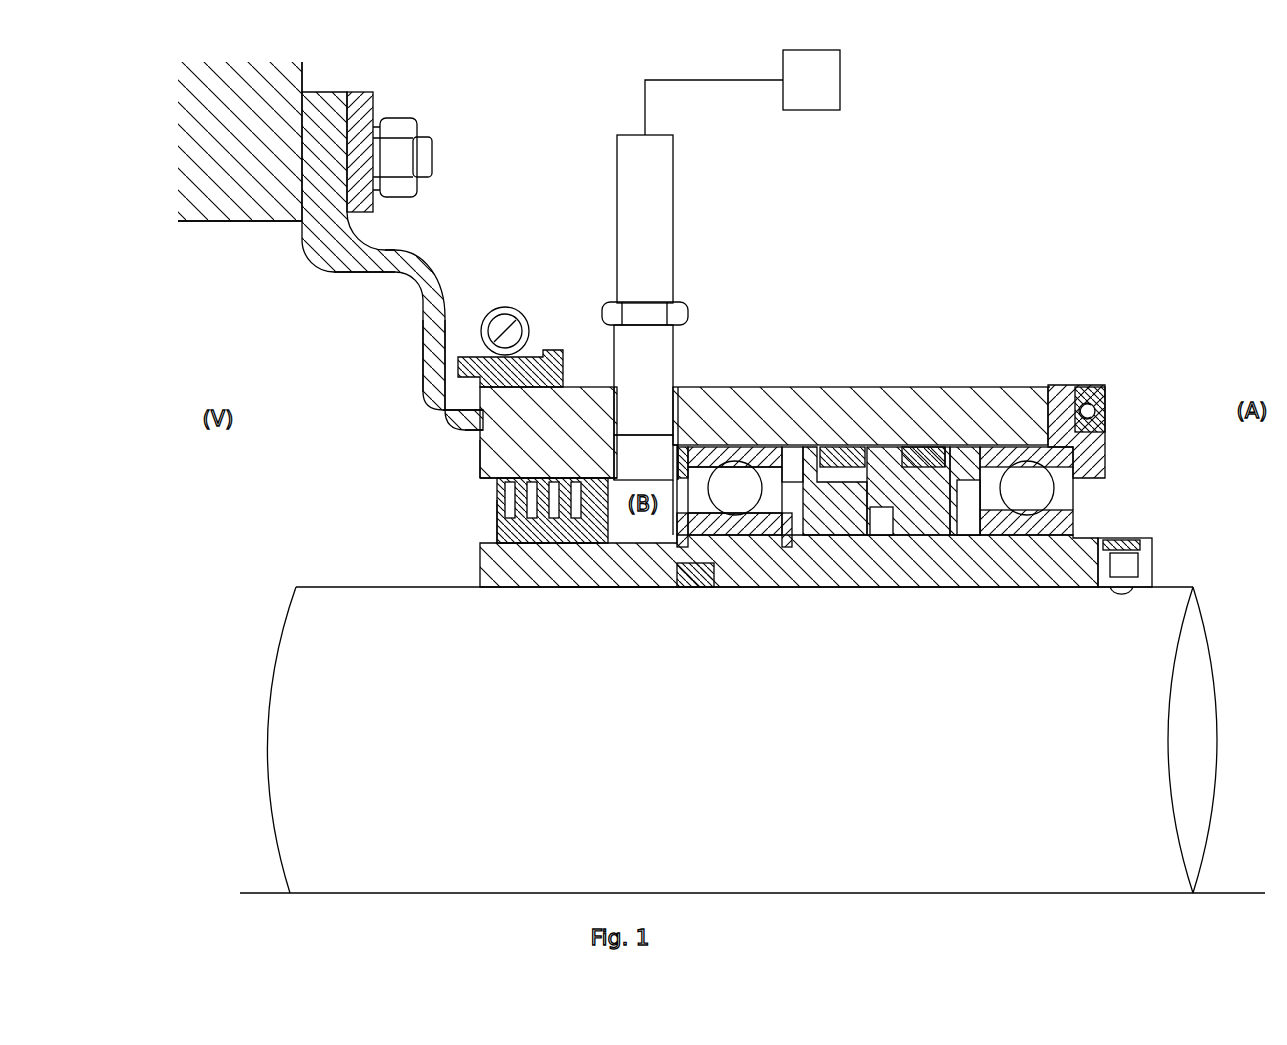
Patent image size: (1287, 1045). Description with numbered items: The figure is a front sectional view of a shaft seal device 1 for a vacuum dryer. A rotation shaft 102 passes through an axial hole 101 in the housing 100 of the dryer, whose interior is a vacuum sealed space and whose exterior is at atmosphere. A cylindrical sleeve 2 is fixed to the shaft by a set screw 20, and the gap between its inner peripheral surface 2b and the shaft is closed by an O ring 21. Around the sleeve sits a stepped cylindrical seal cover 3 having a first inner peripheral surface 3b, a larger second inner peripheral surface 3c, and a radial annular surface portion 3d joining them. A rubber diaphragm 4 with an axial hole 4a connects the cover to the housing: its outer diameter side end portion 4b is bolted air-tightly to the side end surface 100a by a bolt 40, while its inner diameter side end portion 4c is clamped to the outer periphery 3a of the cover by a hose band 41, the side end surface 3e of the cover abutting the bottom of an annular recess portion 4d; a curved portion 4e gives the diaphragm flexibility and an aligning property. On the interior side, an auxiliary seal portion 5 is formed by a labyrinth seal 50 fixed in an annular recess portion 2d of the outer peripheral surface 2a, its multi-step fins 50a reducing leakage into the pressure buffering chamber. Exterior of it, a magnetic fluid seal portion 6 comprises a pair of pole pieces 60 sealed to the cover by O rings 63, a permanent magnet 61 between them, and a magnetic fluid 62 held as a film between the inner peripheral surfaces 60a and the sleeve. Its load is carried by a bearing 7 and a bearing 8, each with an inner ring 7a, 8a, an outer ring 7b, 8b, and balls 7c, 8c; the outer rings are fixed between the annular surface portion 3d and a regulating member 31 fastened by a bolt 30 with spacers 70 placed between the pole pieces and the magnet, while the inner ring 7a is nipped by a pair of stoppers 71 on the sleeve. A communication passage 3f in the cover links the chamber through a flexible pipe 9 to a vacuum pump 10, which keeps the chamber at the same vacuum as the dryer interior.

The shaft seal device 1 is at (1154, 308).
The sleeve 2 is at (740, 610).
The outer peripheral surface of the sleeve 2a is at (585, 587).
The inner peripheral surface of the sleeve 2b is at (562, 548).
The annular recess portion 2d is at (545, 548).
The O ring 21 is at (700, 587).
The seal cover 3 is at (722, 394).
The outer periphery of the end portion of the seal cover 3a is at (618, 386).
The first inner peripheral surface 3b is at (497, 480).
The second inner peripheral surface 3c is at (1010, 386).
The annular surface portion 3d is at (680, 387).
The side end surface of the seal cover 3e is at (480, 465).
The communication passage 3f is at (620, 458).
The diaphragm 4 is at (432, 253).
The axial hole 4a is at (445, 400).
The outer diameter side end portion 4b is at (345, 92).
The inner diameter side end portion 4c is at (468, 356).
The annular recess portion 4d is at (480, 430).
The curved portion 4e is at (410, 297).
The bolt 40 is at (418, 126).
The hose band 41 is at (505, 307).
The auxiliary seal portion 5 is at (462, 528).
The labyrinth seal 50 is at (552, 510).
The fins 50a is at (495, 520).
The magnetic fluid seal portion 6 is at (883, 488).
The pole pieces 60 is at (880, 480).
The inner peripheral surfaces of the pole pieces 60a is at (960, 470).
The permanent magnet 61 is at (830, 500).
The magnetic fluid 62 is at (965, 500).
The O rings 63 is at (840, 453).
The bearing 7 is at (833, 508).
The inner ring 7a is at (788, 547).
The outer ring 7b is at (740, 452).
The balls 7c is at (745, 535).
The spacers 70 is at (707, 456).
The stoppers 71 is at (693, 487).
The bearing 8 is at (1082, 583).
The inner ring 8a is at (1030, 500).
The outer ring 8b is at (1075, 455).
The balls 8c is at (1030, 535).
The flexible pipe 9 is at (665, 188).
The vacuum pump 10 is at (832, 80).
The set screw 20 is at (1127, 536).
The bolt 30 is at (1116, 384).
The regulating member 31 is at (1083, 388).
The housing 100 is at (262, 230).
The side end surface 100a is at (304, 68).
The axial hole 101 is at (212, 224).
The rotation shaft 102 is at (290, 700).